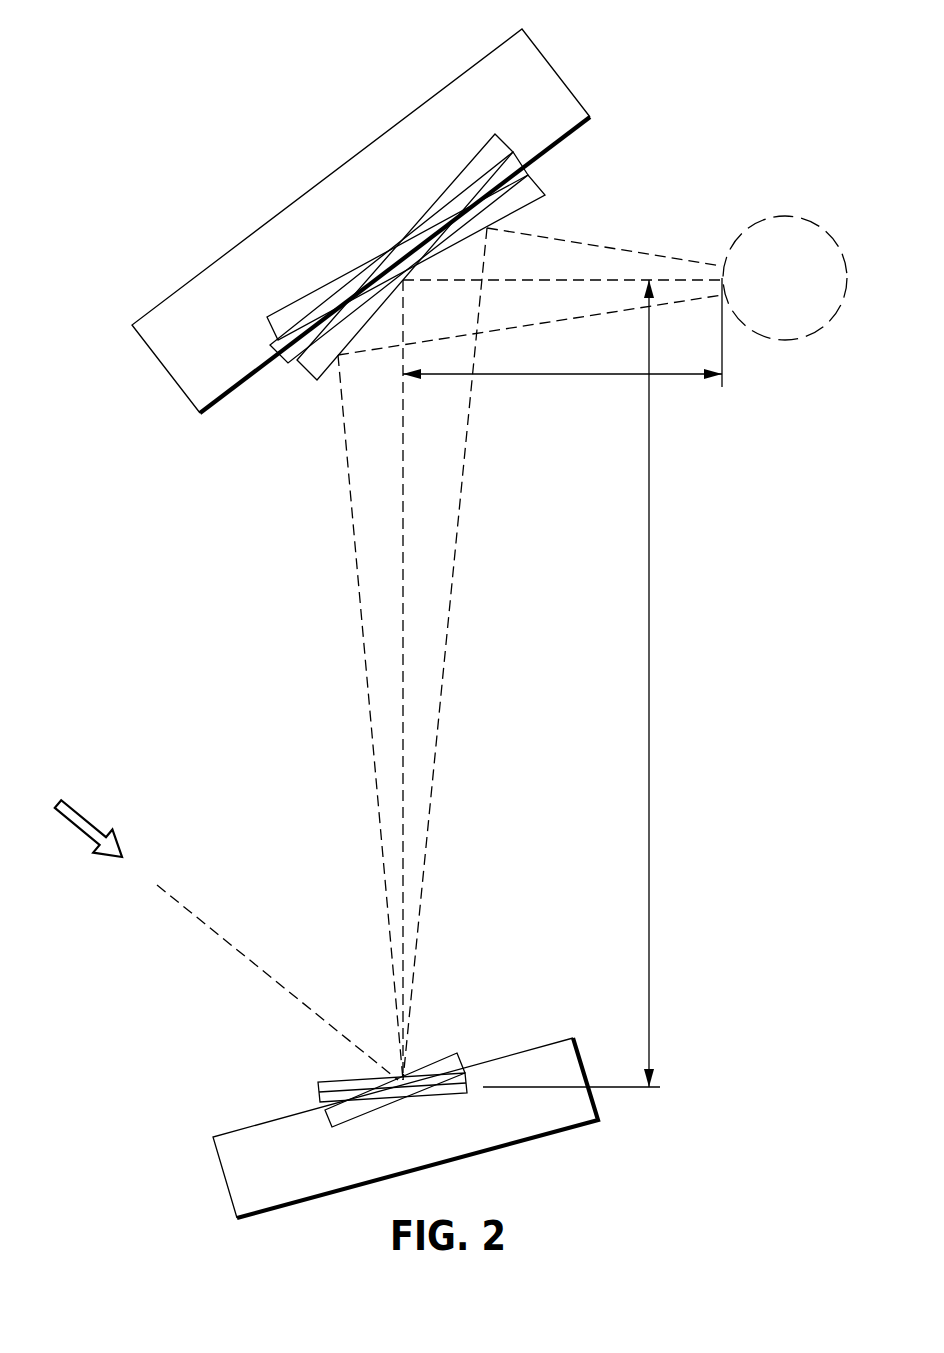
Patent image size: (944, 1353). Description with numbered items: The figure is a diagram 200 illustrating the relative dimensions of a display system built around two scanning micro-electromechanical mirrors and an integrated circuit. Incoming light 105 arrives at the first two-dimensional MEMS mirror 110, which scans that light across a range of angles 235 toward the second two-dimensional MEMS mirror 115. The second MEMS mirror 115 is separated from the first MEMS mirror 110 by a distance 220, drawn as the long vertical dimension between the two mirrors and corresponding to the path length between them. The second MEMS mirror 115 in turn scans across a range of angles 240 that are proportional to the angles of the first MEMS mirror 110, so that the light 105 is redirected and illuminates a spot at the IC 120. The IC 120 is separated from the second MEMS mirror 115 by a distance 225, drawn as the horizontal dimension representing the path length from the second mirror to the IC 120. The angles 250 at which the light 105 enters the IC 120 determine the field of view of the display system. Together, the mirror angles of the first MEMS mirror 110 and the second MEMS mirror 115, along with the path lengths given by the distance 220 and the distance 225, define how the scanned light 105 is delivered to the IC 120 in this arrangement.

The diagram 200 is at (100, 75).
The light 105 is at (207, 927).
The first 2-D MEMS mirror 110 is at (220, 1177).
The second 2-D MEMS mirror 115 is at (328, 177).
The IC 120 is at (790, 216).
The distance 220 is at (649, 682).
The distance 225 is at (562, 374).
The range of angles 235 is at (318, 1085).
The range of angles 240 is at (305, 377).
The angles 250 is at (640, 213).